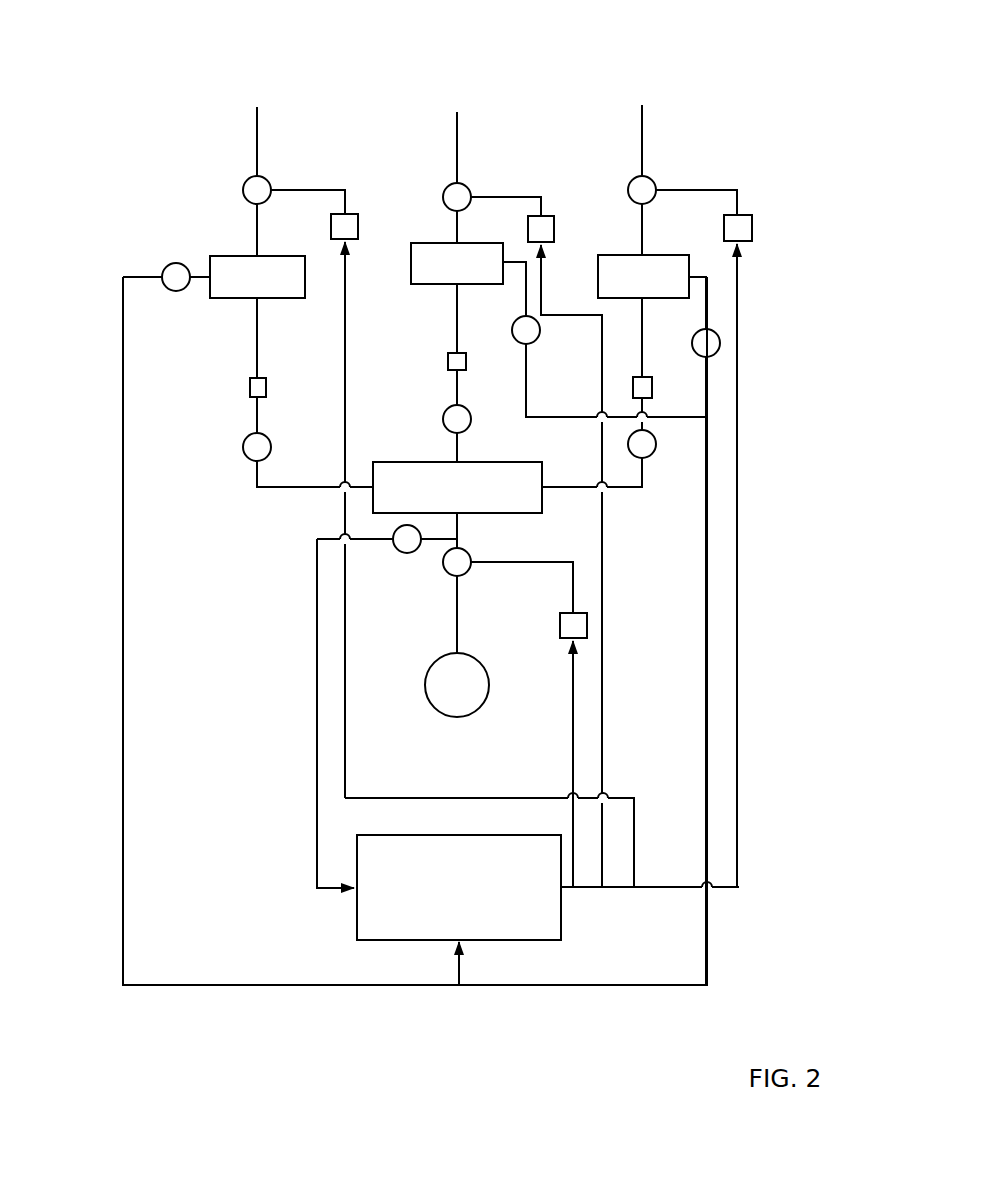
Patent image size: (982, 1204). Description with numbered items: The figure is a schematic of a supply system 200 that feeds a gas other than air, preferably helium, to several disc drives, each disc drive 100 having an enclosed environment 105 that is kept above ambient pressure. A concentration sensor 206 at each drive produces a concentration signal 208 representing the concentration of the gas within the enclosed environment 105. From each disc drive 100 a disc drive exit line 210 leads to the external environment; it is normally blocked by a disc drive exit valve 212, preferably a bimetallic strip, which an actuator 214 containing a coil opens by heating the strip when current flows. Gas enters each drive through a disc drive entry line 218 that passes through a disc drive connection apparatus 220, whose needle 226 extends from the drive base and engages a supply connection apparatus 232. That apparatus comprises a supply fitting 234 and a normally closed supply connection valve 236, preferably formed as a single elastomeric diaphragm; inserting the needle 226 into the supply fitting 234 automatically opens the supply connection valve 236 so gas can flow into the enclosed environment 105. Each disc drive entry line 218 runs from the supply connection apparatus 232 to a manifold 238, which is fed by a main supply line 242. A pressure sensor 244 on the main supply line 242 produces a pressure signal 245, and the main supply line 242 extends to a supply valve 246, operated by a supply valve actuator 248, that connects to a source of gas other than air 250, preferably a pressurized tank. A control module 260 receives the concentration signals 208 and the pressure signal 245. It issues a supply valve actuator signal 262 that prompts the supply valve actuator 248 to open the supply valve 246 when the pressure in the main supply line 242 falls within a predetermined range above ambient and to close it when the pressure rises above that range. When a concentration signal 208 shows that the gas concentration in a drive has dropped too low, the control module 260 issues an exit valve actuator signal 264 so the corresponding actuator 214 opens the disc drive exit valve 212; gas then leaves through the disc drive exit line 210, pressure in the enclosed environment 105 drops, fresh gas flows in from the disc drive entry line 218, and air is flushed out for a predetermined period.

The supply system 200 is at (803, 93).
The disc drive 100 is at (438, 251).
The enclosed environment 105 is at (255, 268).
The concentration sensor 206 is at (164, 270).
The concentration signal 208 is at (123, 360).
The disc drive exit line 210 is at (256, 220).
The disc drive exit valve 212 is at (248, 183).
The actuator 214 is at (348, 214).
The disc drive entry line 218 is at (256, 318).
The disc drive connection apparatus 220 is at (496, 389).
The needle 226 is at (267, 385).
The supply connection apparatus 232 is at (464, 415).
The supply fitting 234 is at (256, 410).
The supply connection valve 236 is at (272, 450).
The manifold 238 is at (390, 462).
The main supply line 242 is at (460, 520).
The pressure sensor 244 is at (413, 553).
The pressure signal 245 is at (317, 605).
The supply valve 246 is at (471, 570).
The supply valve actuator 248 is at (560, 625).
The source of gas other than air 250 is at (488, 700).
The control module 260 is at (561, 915).
The supply valve actuator signal 262 is at (573, 785).
The exit valve actuator signal 264 is at (603, 780).